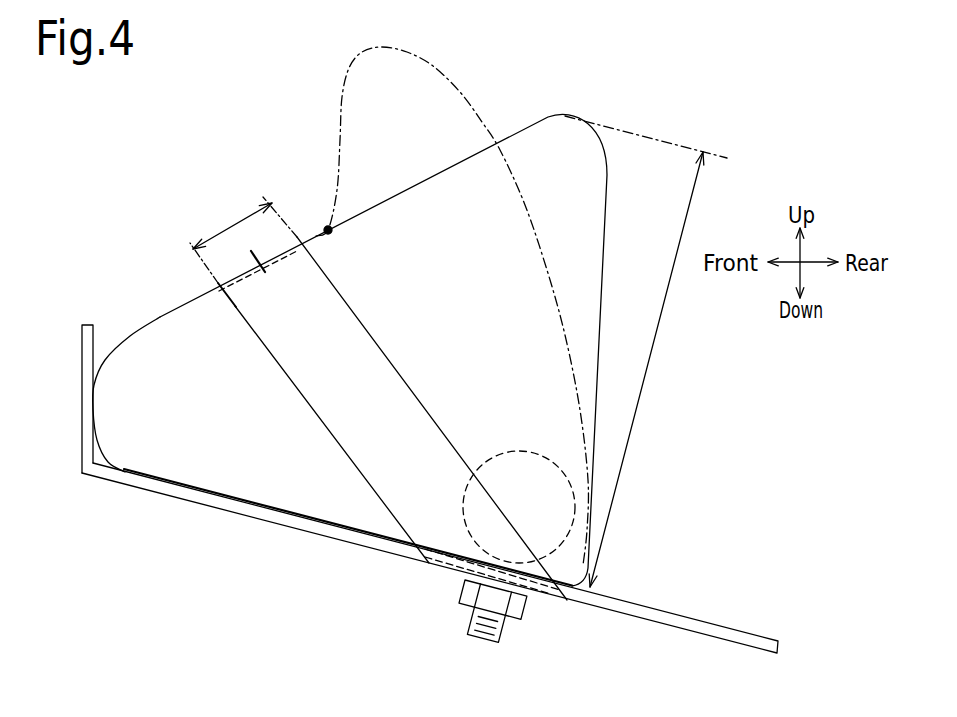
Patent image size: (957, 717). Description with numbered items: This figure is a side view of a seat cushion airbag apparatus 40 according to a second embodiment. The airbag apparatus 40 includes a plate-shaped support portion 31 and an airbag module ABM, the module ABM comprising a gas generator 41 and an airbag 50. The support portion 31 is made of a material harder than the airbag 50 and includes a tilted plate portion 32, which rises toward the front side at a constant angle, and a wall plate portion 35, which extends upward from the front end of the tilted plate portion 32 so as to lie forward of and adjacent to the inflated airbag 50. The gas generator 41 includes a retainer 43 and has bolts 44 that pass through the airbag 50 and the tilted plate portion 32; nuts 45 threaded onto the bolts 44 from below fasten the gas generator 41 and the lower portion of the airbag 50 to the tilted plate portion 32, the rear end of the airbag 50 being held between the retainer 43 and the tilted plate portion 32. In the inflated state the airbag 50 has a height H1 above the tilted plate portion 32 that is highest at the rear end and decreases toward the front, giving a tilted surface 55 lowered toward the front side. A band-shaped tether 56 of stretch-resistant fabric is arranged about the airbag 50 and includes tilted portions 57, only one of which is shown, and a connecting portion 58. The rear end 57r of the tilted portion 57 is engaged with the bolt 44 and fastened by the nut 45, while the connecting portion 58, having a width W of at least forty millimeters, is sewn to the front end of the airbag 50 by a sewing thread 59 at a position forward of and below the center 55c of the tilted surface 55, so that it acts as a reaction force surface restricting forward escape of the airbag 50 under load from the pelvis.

The support portion 31 is at (415, 489).
The tilted plate portion 32 is at (120, 473).
The wall plate portion 35 is at (84, 430).
The airbag apparatus 40 is at (278, 182).
The gas generator 41 is at (510, 471).
The retainer 43 is at (487, 439).
The bolt 44 is at (500, 638).
The nut 45 is at (520, 605).
The airbag 50 is at (467, 92).
The tilted surface 55 is at (411, 183).
The center of the tilted surface 55c is at (332, 228).
The tether 56 is at (382, 353).
The tilted portion 57 is at (393, 418).
The rear end of the tilted portion 57r is at (443, 573).
The connecting portion 58 is at (220, 287).
The sewing thread 59 is at (265, 273).
The width of the connecting portion W is at (232, 224).
The height of the airbag H1 is at (654, 346).
The airbag module ABM is at (667, 426).